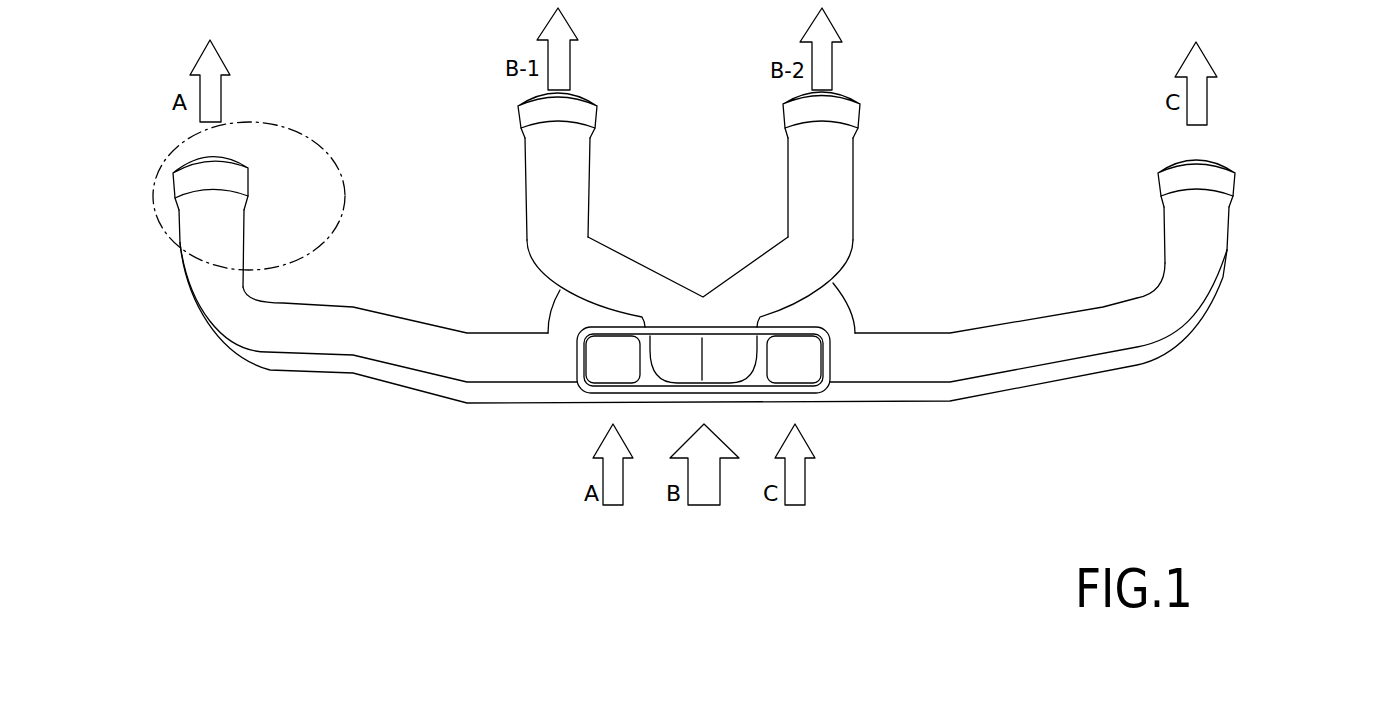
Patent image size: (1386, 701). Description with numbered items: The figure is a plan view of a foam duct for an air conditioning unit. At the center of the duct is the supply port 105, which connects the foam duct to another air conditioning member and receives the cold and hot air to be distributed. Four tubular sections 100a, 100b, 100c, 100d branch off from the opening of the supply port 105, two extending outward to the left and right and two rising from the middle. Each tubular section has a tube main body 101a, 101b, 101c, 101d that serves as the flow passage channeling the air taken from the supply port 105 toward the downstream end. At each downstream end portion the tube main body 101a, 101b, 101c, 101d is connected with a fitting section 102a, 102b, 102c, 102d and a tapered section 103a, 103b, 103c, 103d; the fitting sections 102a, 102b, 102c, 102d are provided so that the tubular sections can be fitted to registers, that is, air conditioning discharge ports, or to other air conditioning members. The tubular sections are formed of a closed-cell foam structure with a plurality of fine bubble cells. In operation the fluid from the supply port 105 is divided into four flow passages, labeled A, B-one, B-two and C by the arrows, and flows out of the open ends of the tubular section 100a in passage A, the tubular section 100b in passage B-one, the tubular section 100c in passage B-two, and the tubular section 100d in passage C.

The tubular section 100a is at (256, 192).
The tube main body 101a is at (243, 225).
The fitting section 102a is at (244, 197).
The tapered section 103a is at (246, 164).
The tubular section 100b is at (615, 139).
The tube main body 101b is at (591, 158).
The fitting section 102b is at (591, 131).
The tapered section 103b is at (592, 101).
The tubular section 100c is at (885, 139).
The tube main body 101c is at (850, 158).
The fitting section 102c is at (852, 127).
The tapered section 103c is at (855, 100).
The tubular section 100d is at (1247, 175).
The tube main body 101d is at (1228, 219).
The fitting section 102d is at (1230, 194).
The tapered section 103d is at (1232, 170).
The supply port 105 is at (828, 362).